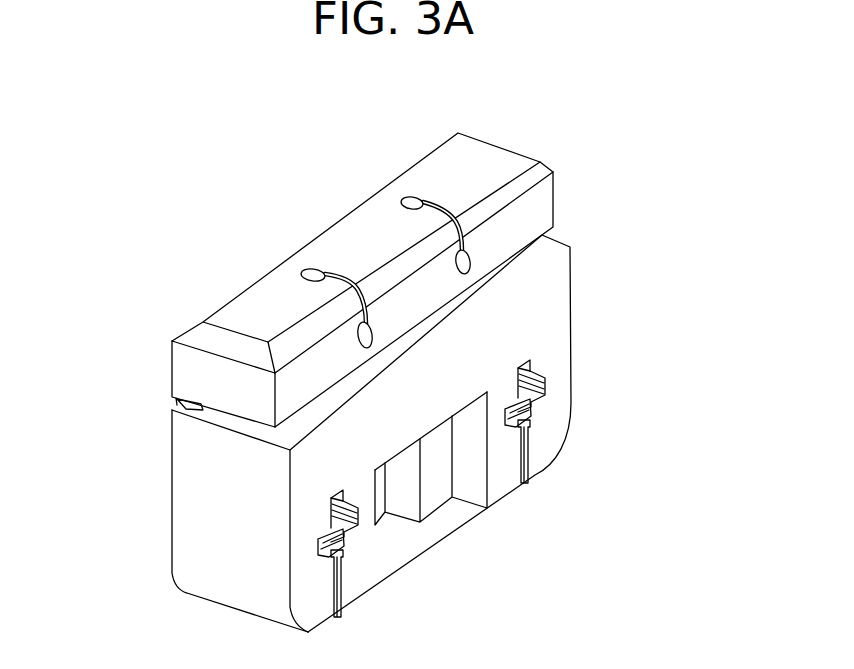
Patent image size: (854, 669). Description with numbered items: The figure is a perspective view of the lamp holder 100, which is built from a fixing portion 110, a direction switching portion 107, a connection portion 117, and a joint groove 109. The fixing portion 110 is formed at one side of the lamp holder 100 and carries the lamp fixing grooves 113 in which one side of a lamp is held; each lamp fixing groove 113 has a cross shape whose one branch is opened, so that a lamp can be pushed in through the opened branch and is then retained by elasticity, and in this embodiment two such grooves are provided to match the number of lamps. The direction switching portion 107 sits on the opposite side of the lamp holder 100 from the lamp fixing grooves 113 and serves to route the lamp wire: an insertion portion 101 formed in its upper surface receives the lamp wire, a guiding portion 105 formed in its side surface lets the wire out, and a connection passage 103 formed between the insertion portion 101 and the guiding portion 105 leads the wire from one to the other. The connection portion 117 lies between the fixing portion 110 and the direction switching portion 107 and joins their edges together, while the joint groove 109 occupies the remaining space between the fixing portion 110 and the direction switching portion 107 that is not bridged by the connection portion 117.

The lamp holder 100 is at (133, 142).
The insertion portion 101 is at (424, 197).
The connection passage 103 is at (470, 212).
The guiding portion 105 is at (467, 241).
The direction switching portion 107 is at (668, 123).
The joint groove 109 is at (490, 290).
The fixing portion 110 is at (187, 482).
The lamp fixing groove 113 is at (357, 530).
The connection portion 117 is at (176, 398).